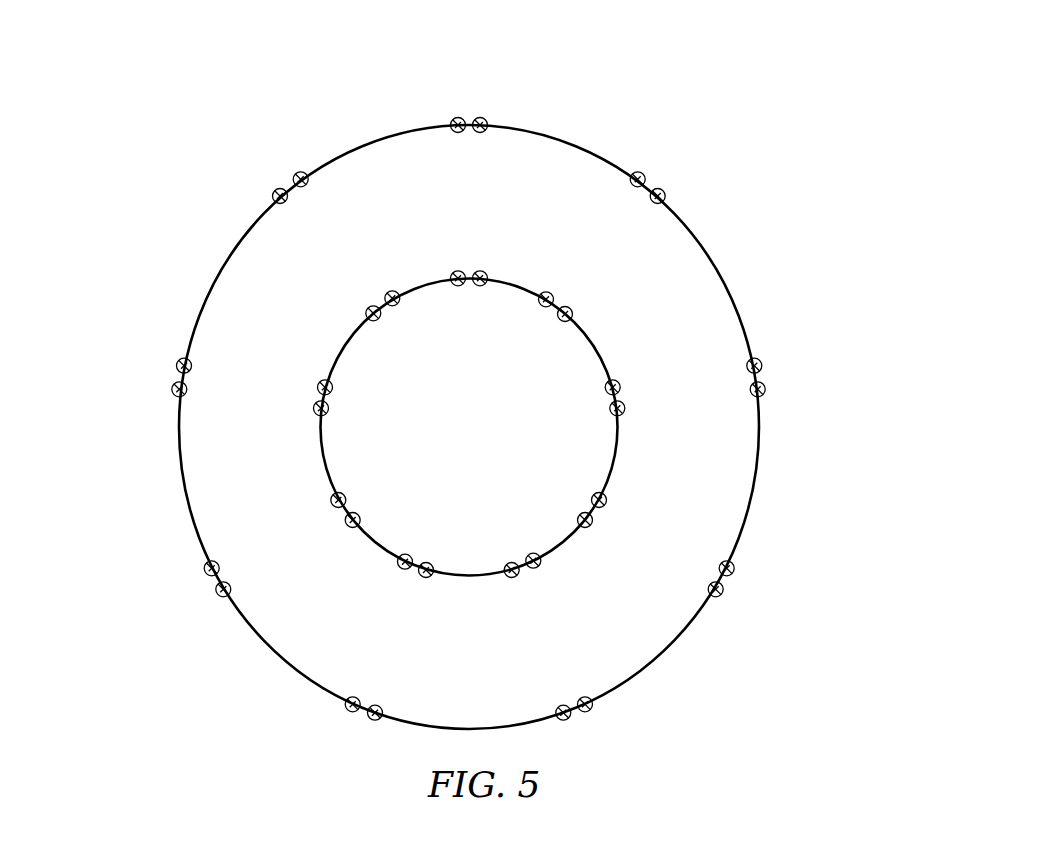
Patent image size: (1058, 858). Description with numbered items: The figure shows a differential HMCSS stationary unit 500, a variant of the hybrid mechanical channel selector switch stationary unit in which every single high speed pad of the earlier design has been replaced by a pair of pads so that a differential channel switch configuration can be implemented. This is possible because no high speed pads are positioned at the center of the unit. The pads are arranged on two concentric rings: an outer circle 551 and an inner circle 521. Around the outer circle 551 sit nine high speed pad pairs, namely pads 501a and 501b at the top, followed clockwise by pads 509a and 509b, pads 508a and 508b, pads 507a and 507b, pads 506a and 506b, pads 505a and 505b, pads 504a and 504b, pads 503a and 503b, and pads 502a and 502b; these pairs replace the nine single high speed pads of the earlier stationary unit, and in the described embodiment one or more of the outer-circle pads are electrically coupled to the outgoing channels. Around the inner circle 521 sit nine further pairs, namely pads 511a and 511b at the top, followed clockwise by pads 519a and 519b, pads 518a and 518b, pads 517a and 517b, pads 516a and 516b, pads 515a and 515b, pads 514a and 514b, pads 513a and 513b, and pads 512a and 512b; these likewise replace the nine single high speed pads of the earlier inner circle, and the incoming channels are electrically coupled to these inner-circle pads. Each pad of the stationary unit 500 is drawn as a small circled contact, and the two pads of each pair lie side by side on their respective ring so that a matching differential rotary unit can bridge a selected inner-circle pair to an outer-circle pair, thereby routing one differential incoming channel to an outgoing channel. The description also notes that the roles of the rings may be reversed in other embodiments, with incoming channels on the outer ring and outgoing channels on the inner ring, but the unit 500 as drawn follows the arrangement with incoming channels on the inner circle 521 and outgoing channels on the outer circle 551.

The differential HMCSS stationary unit 500 is at (627, 111).
The outer circle 551 is at (570, 148).
The inner circle 521 is at (584, 342).
The high speed pad 501a is at (452, 119).
The high speed pad 501b is at (487, 119).
The high speed pad 502a is at (273, 197).
The high speed pad 502b is at (294, 179).
The high speed pad 503a is at (172, 390).
The high speed pad 503b is at (177, 366).
The high speed pad 504a is at (217, 595).
The high speed pad 504b is at (205, 571).
The high speed pad 505a is at (370, 719).
The high speed pad 505b is at (346, 707).
The high speed pad 506a is at (592, 706).
The high speed pad 506b is at (568, 719).
The high speed pad 507a is at (734, 569).
The high speed pad 507b is at (723, 590).
The high speed pad 508a is at (762, 366).
The high speed pad 508b is at (765, 389).
The high speed pad 509a is at (645, 176).
The high speed pad 509b is at (665, 198).
The high speed pad 511a is at (455, 286).
The high speed pad 511b is at (484, 286).
The high speed pad 512a is at (366, 311).
The high speed pad 512b is at (386, 292).
The high speed pad 513a is at (329, 409).
The high speed pad 513b is at (333, 388).
The high speed pad 514a is at (355, 512).
The high speed pad 514b is at (346, 492).
The high speed pad 515a is at (423, 578).
The high speed pad 515b is at (402, 569).
The high speed pad 516a is at (538, 568).
The high speed pad 516b is at (515, 578).
The high speed pad 517a is at (596, 492).
The high speed pad 517b is at (583, 512).
The high speed pad 518a is at (606, 388).
The high speed pad 518b is at (611, 408).
The high speed pad 519a is at (553, 297).
The high speed pad 519b is at (572, 313).